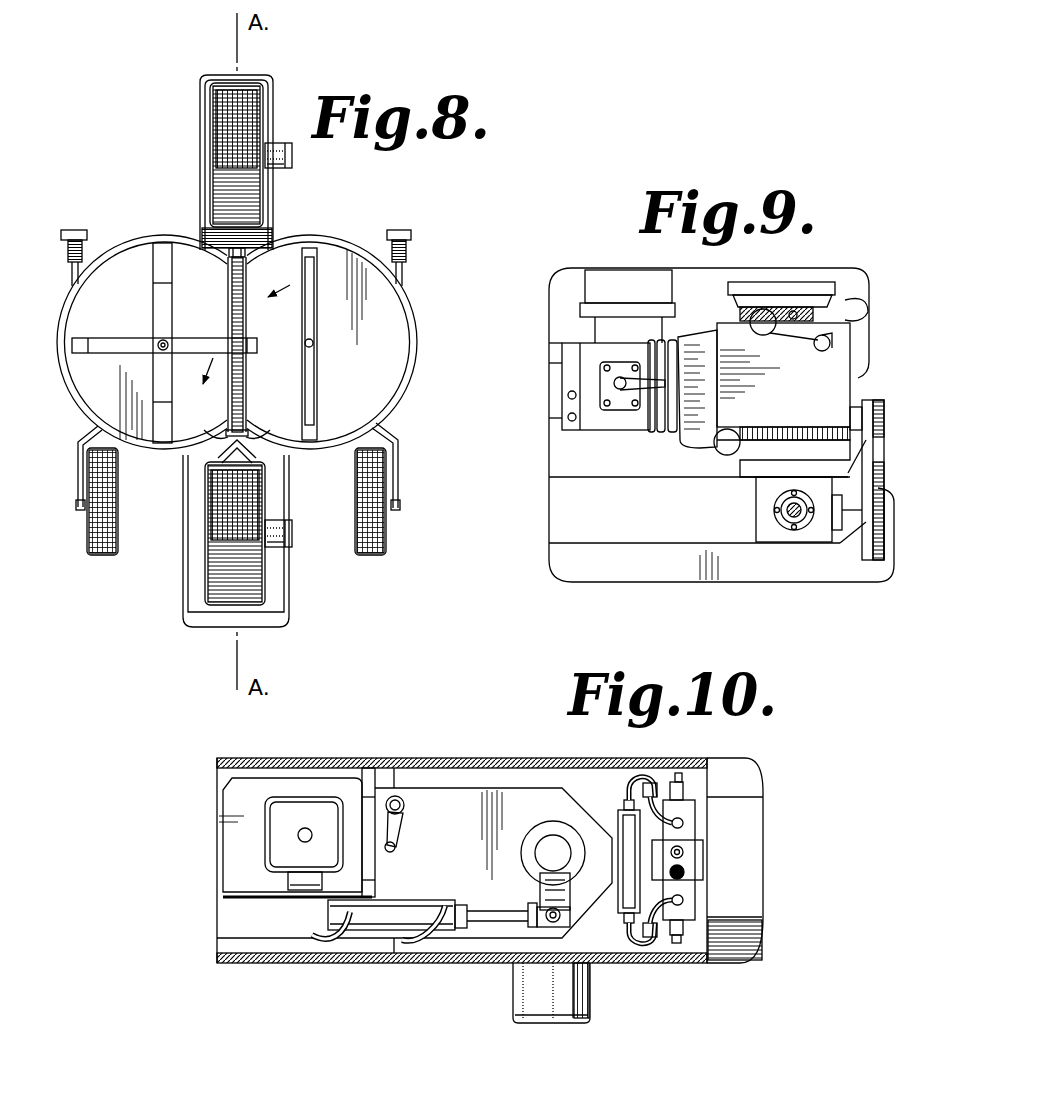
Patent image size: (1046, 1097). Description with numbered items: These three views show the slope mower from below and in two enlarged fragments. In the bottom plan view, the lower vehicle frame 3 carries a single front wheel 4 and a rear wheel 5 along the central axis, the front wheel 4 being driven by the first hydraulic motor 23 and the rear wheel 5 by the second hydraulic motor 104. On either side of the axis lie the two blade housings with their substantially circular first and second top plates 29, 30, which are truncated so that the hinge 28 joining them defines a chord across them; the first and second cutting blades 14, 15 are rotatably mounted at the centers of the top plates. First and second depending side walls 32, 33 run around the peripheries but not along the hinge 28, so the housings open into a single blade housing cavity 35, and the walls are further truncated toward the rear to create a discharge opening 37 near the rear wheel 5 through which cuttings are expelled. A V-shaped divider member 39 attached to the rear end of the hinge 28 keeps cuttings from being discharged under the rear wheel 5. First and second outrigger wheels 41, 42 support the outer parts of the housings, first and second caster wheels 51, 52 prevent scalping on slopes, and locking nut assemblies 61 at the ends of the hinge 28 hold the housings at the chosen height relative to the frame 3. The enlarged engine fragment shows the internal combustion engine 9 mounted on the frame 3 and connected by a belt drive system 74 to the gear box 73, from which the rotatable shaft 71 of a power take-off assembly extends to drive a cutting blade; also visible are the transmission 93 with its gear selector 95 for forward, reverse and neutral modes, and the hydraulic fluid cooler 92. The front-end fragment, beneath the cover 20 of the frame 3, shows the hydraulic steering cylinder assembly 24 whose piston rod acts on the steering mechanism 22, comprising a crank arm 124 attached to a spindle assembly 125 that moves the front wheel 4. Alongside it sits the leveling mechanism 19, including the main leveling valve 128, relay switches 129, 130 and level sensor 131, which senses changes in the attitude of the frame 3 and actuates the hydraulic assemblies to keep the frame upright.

In FIG. 8, the lower vehicle frame 3 is at (203, 228).
In FIG. 9, the lower vehicle frame 3 is at (600, 479).
In FIG. 10, the lower vehicle frame 3 is at (365, 767).
In FIG. 8, the front wheel 4 is at (210, 140).
In FIG. 8, the rear wheel 5 is at (210, 597).
In FIG. 9, the internal combustion engine 9 is at (728, 323).
In FIG. 10, the internal combustion engine 9 is at (226, 847).
In FIG. 8, the first cutting blade 14 is at (315, 310).
In FIG. 8, the second cutting blade 15 is at (118, 342).
In FIG. 10, the leveling mechanism 19 is at (605, 941).
In FIG. 10, the cover 20 is at (745, 771).
In FIG. 10, the steering mechanism 22 is at (553, 823).
In FIG. 8, the first hydraulic motor 23 is at (292, 160).
In FIG. 10, the first hydraulic motor 23 is at (520, 988).
In FIG. 10, the hydraulic steering cylinder assembly 24 is at (473, 898).
In FIG. 8, the hinge 28 is at (245, 378).
In FIG. 8, the first top plate 29 is at (332, 342).
In FIG. 8, the second top plate 30 is at (142, 342).
In FIG. 8, the first depending side wall 32 is at (398, 400).
In FIG. 8, the second depending side wall 33 is at (79, 404).
In FIG. 8, the blade housing cavity 35 is at (394, 335).
In FIG. 8, the discharge opening 37 is at (214, 430).
In FIG. 8, the divider member 39 is at (218, 456).
In FIG. 8, the first outrigger wheel 41 is at (386, 548).
In FIG. 8, the second outrigger wheel 42 is at (88, 552).
In FIG. 8, the first caster wheel 51 is at (403, 263).
In FIG. 8, the second caster wheel 52 is at (69, 262).
In FIG. 8, the locking nut assembly 61 is at (228, 257).
In FIG. 9, the rotatable shaft 71 is at (783, 513).
In FIG. 9, the gear box 73 is at (760, 487).
In FIG. 9, the belt drive system 74 is at (858, 562).
In FIG. 9, the hydraulic fluid cooler 92 is at (658, 433).
In FIG. 9, the transmission 93 is at (588, 427).
In FIG. 9, the gear selector 95 is at (623, 408).
In FIG. 8, the second hydraulic motor 104 is at (290, 545).
In FIG. 10, the crank arm 124 is at (541, 903).
In FIG. 10, the spindle assembly 125 is at (527, 850).
In FIG. 10, the main leveling valve 128 is at (688, 832).
In FIG. 10, the relay switch 129 is at (655, 767).
In FIG. 10, the relay switch 130 is at (658, 952).
In FIG. 10, the level sensor 131 is at (623, 812).